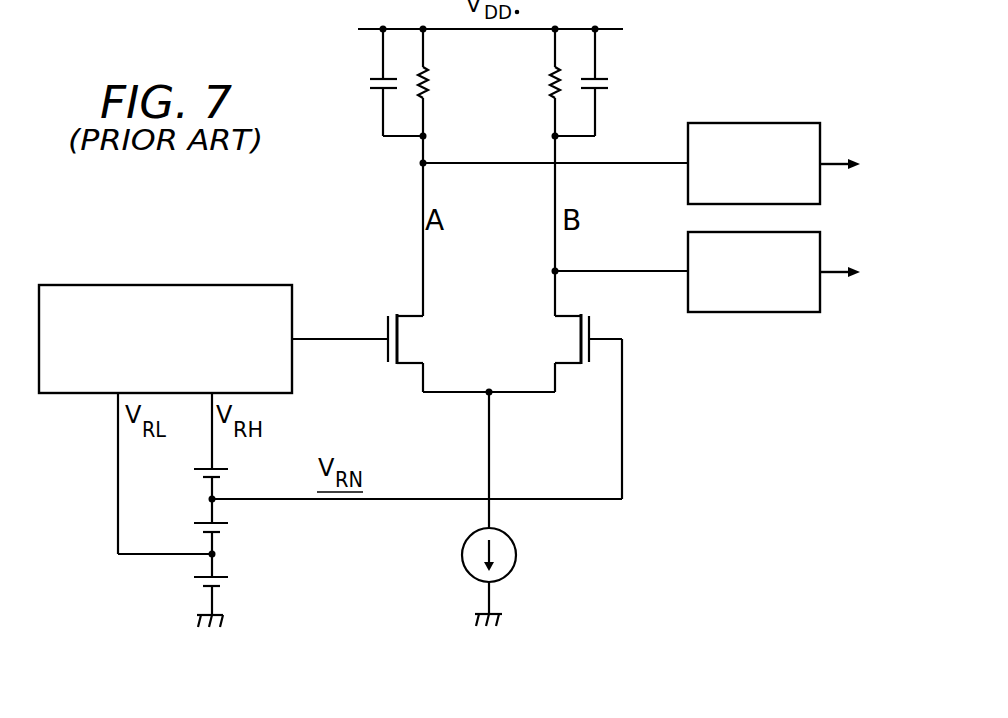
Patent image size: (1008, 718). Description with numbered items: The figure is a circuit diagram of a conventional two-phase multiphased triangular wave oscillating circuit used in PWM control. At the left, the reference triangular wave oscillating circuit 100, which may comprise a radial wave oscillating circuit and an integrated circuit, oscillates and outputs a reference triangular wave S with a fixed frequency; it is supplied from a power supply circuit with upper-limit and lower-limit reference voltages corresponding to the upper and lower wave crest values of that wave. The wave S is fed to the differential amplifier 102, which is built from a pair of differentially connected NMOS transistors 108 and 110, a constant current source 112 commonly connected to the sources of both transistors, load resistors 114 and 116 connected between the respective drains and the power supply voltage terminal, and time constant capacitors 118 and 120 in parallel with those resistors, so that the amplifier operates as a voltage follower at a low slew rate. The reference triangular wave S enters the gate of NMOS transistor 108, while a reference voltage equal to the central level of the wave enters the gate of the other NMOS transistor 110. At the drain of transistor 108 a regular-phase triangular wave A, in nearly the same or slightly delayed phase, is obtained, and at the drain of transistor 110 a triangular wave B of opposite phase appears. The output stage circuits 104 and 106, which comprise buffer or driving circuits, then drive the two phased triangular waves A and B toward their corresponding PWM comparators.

The reference triangular wave oscillating circuit 100 is at (165, 285).
The differential amplifier 102 is at (672, 478).
The output stage circuit 104 is at (753, 123).
The output stage circuit 106 is at (753, 312).
The NMOS transistor 108 is at (387, 352).
The NMOS transistor 110 is at (590, 325).
The constant current source 112 is at (516, 555).
The load resistor 114 is at (430, 75).
The load resistor 116 is at (548, 90).
The time constant capacitor 118 is at (370, 84).
The time constant capacitor 120 is at (610, 83).